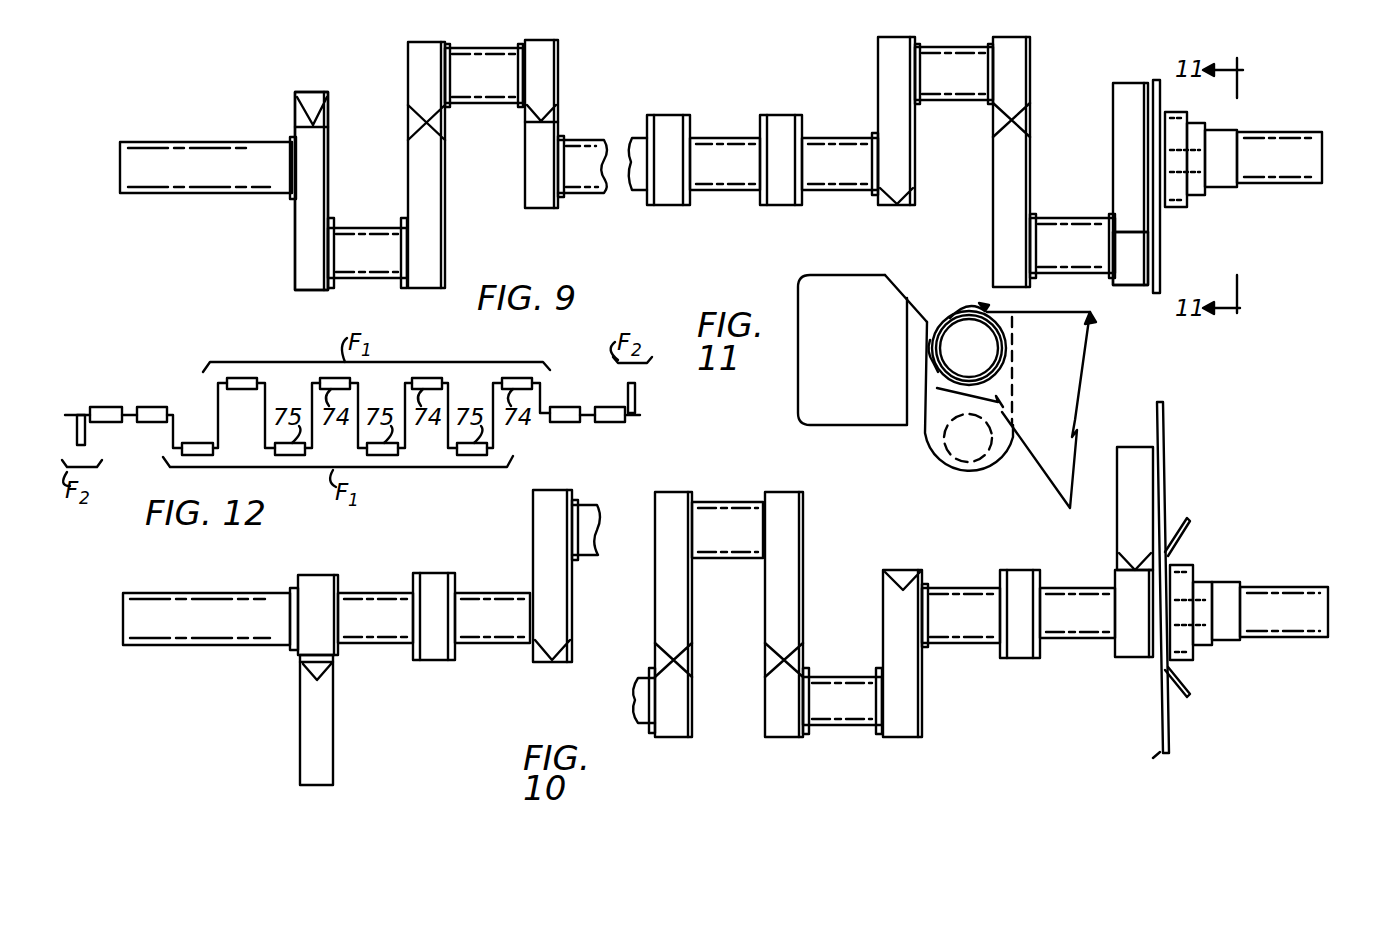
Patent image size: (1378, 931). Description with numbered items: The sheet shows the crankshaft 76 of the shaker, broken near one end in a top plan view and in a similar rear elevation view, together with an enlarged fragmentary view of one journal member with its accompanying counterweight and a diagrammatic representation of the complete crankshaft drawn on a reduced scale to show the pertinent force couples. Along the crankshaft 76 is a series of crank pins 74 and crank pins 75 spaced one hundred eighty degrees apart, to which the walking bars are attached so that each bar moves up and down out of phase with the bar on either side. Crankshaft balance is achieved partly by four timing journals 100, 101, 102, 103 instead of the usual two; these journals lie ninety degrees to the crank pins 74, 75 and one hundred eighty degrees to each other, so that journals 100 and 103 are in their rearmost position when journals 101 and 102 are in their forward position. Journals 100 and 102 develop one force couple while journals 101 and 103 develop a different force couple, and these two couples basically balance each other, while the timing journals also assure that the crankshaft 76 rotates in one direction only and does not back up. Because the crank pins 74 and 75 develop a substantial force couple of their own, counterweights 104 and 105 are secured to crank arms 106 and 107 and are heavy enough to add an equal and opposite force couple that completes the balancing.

In FIG. 9, the crank pin 74 is at (742, 145).
In FIG. 12, the crank pin 74 is at (238, 389).
In FIG. 10, the crank pin 74 is at (712, 545).
In FIG. 9, the crank pin 75 is at (850, 145).
In FIG. 12, the crank pin 75 is at (200, 443).
In FIG. 10, the crank pin 75 is at (843, 688).
In FIG. 9, the crankshaft 76 is at (1275, 163).
In FIG. 10, the crankshaft 76 is at (1273, 597).
In FIG. 9, the timing journal 100 is at (347, 237).
In FIG. 12, the timing journal 100 is at (102, 403).
In FIG. 10, the timing journal 100 is at (357, 600).
In FIG. 9, the timing journal 101 is at (500, 97).
In FIG. 12, the timing journal 101 is at (147, 403).
In FIG. 10, the timing journal 101 is at (515, 570).
In FIG. 9, the timing journal 102 is at (938, 93).
In FIG. 12, the timing journal 102 is at (577, 423).
In FIG. 10, the timing journal 102 is at (975, 602).
In FIG. 9, the timing journal 103 is at (1107, 203).
In FIG. 11, the timing journal 103 is at (960, 441).
In FIG. 12, the timing journal 103 is at (598, 423).
In FIG. 10, the timing journal 103 is at (1100, 565).
In FIG. 9, the counterweight 104 is at (313, 104).
In FIG. 11, the counterweight 104 is at (812, 385).
In FIG. 12, the counterweight 104 is at (87, 427).
In FIG. 10, the counterweight 104 is at (323, 743).
In FIG. 9, the counterweight 105 is at (1130, 277).
In FIG. 12, the counterweight 105 is at (628, 392).
In FIG. 10, the counterweight 105 is at (1137, 457).
In FIG. 9, the crank arm 106 is at (307, 222).
In FIG. 11, the crank arm 106 is at (982, 348).
In FIG. 10, the crank arm 106 is at (307, 588).
In FIG. 9, the crank arm 107 is at (1128, 120).
In FIG. 10, the crank arm 107 is at (1132, 645).